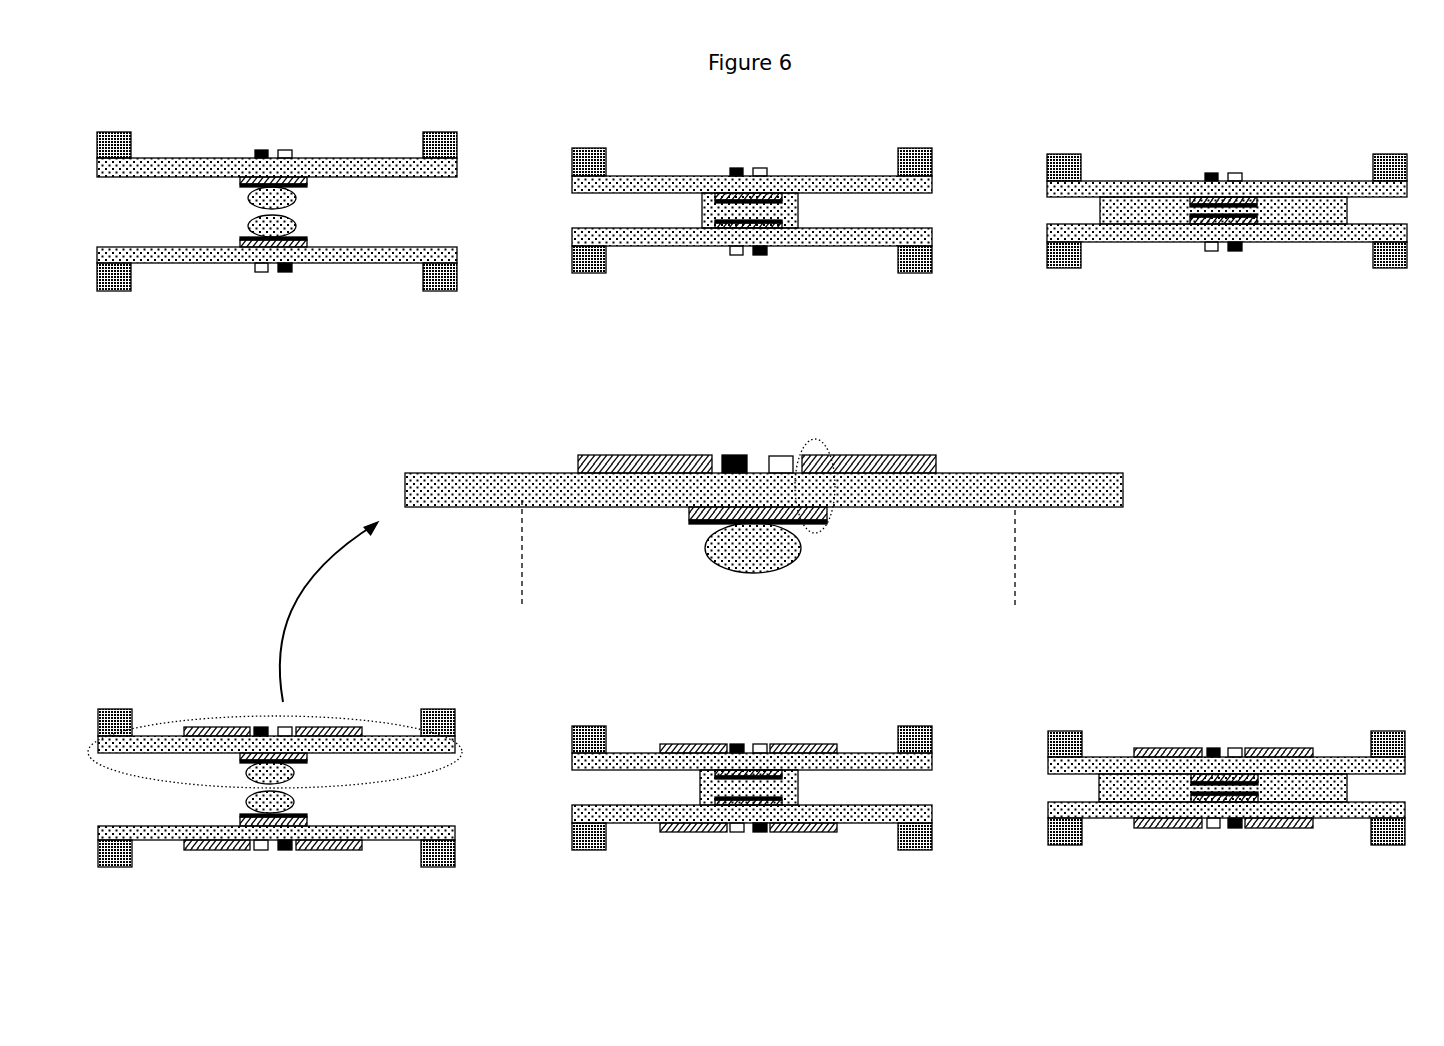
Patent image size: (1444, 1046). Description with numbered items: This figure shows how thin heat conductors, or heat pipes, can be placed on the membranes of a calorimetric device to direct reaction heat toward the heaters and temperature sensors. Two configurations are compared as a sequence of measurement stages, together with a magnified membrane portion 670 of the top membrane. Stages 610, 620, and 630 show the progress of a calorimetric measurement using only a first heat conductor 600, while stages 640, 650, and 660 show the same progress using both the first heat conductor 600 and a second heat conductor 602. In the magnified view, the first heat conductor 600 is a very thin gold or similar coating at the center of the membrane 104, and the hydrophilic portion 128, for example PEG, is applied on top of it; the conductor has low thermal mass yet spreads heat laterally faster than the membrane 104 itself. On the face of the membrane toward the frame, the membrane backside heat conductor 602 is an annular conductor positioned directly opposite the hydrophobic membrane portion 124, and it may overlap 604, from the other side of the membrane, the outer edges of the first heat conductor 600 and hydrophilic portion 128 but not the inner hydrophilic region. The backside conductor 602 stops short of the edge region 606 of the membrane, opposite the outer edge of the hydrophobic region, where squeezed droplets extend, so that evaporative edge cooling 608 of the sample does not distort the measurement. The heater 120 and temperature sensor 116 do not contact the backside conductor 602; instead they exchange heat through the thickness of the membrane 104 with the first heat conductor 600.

The calorimetric measurement stage using only first heat conductor 610 is at (180, 125).
The calorimetric measurement stage using only first heat conductor 620 is at (623, 127).
The calorimetric measurement stage using only first heat conductor 630 is at (1098, 127).
The calorimetric measurement stage using both heat conductors 640 is at (163, 683).
The calorimetric measurement stage using both heat conductors 650 is at (630, 698).
The calorimetric measurement stage using both heat conductors 660 is at (1199, 754).
The magnified membrane portion 670 is at (838, 483).
The membrane backside heat conductor 602 is at (627, 448).
The heater 120 is at (733, 450).
The temperature sensor 116 is at (787, 438).
The overlap 604 is at (833, 440).
The first heat conductor 600 is at (677, 513).
The hydrophilic portion 128 is at (805, 532).
The hydrophobic membrane portion 124 is at (1062, 597).
The membrane 104 is at (1052, 512).
The edge region of the membrane 606 is at (522, 597).
The evaporative edge cooling 608 is at (1087, 784).